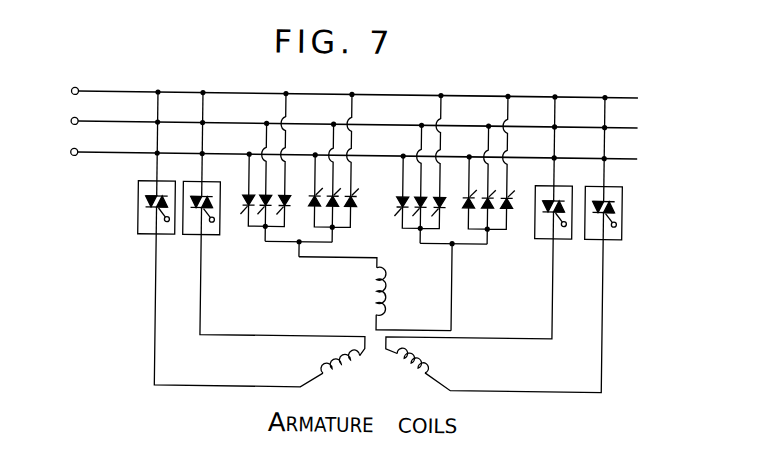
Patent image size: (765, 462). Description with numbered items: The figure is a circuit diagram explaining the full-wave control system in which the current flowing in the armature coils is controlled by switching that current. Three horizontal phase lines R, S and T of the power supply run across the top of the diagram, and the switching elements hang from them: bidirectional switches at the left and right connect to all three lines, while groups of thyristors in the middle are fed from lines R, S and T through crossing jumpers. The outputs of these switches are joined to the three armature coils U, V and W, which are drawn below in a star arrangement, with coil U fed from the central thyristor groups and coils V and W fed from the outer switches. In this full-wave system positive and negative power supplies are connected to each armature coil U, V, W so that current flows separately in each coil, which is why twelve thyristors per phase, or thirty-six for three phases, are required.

The power supply line R is at (344, 94).
The power supply line S is at (343, 124).
The power supply line T is at (343, 155).
The armature coil U is at (375, 294).
The armature coil V is at (494, 318).
The armature coil W is at (260, 315).